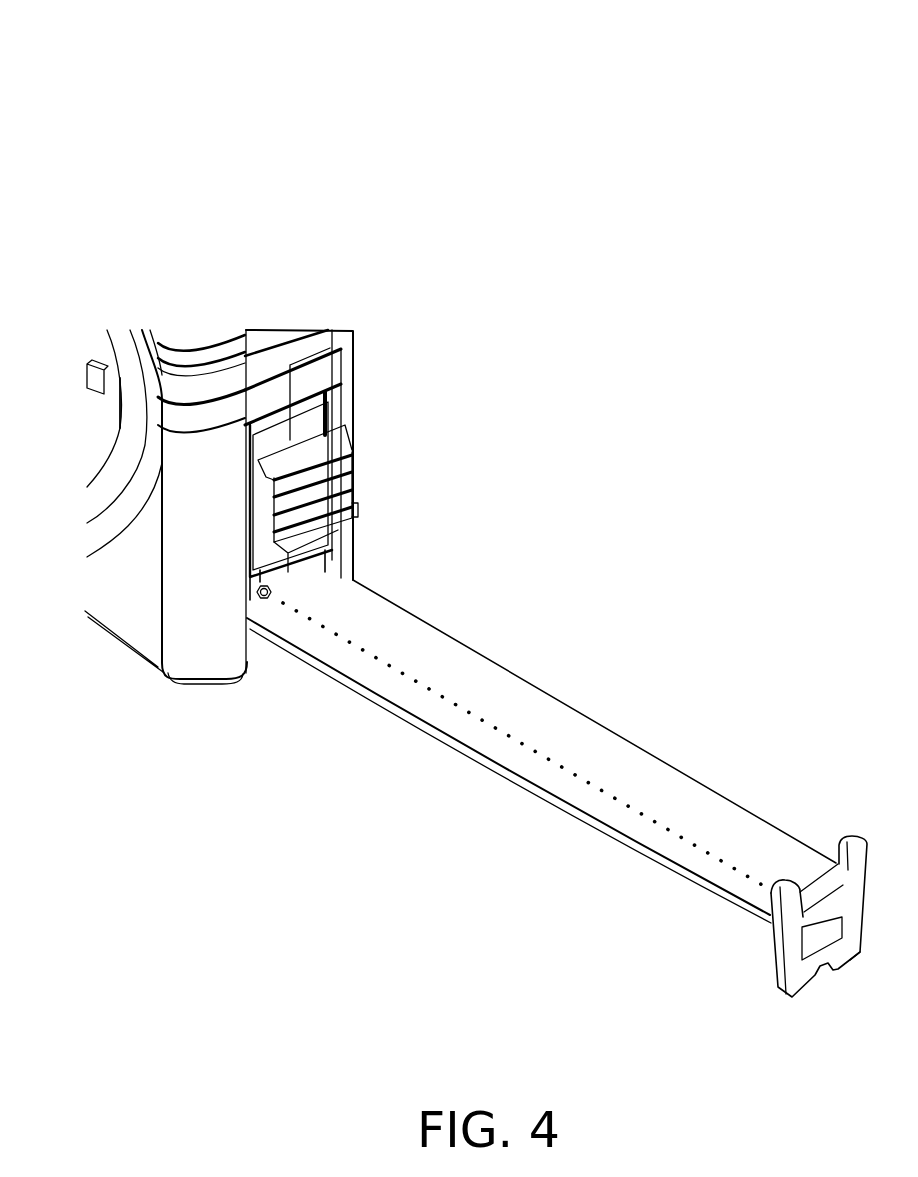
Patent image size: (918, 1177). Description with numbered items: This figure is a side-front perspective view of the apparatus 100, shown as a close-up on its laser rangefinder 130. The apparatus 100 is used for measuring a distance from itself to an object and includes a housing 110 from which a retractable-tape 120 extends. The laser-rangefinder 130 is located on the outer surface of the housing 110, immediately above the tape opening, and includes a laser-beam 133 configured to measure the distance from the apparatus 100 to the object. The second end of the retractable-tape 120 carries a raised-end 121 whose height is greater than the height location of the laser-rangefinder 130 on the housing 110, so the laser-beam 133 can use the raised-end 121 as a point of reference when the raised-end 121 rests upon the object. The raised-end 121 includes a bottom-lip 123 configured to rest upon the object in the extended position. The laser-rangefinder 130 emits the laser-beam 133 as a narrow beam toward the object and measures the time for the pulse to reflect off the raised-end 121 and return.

The apparatus 100 is at (670, 100).
The housing 110 is at (192, 342).
The retractable-tape 120 is at (482, 690).
The raised-end 121 is at (849, 836).
The bottom-lip 123 is at (778, 991).
The laser-rangefinder 130 is at (262, 658).
The laser-beam 133 is at (617, 790).